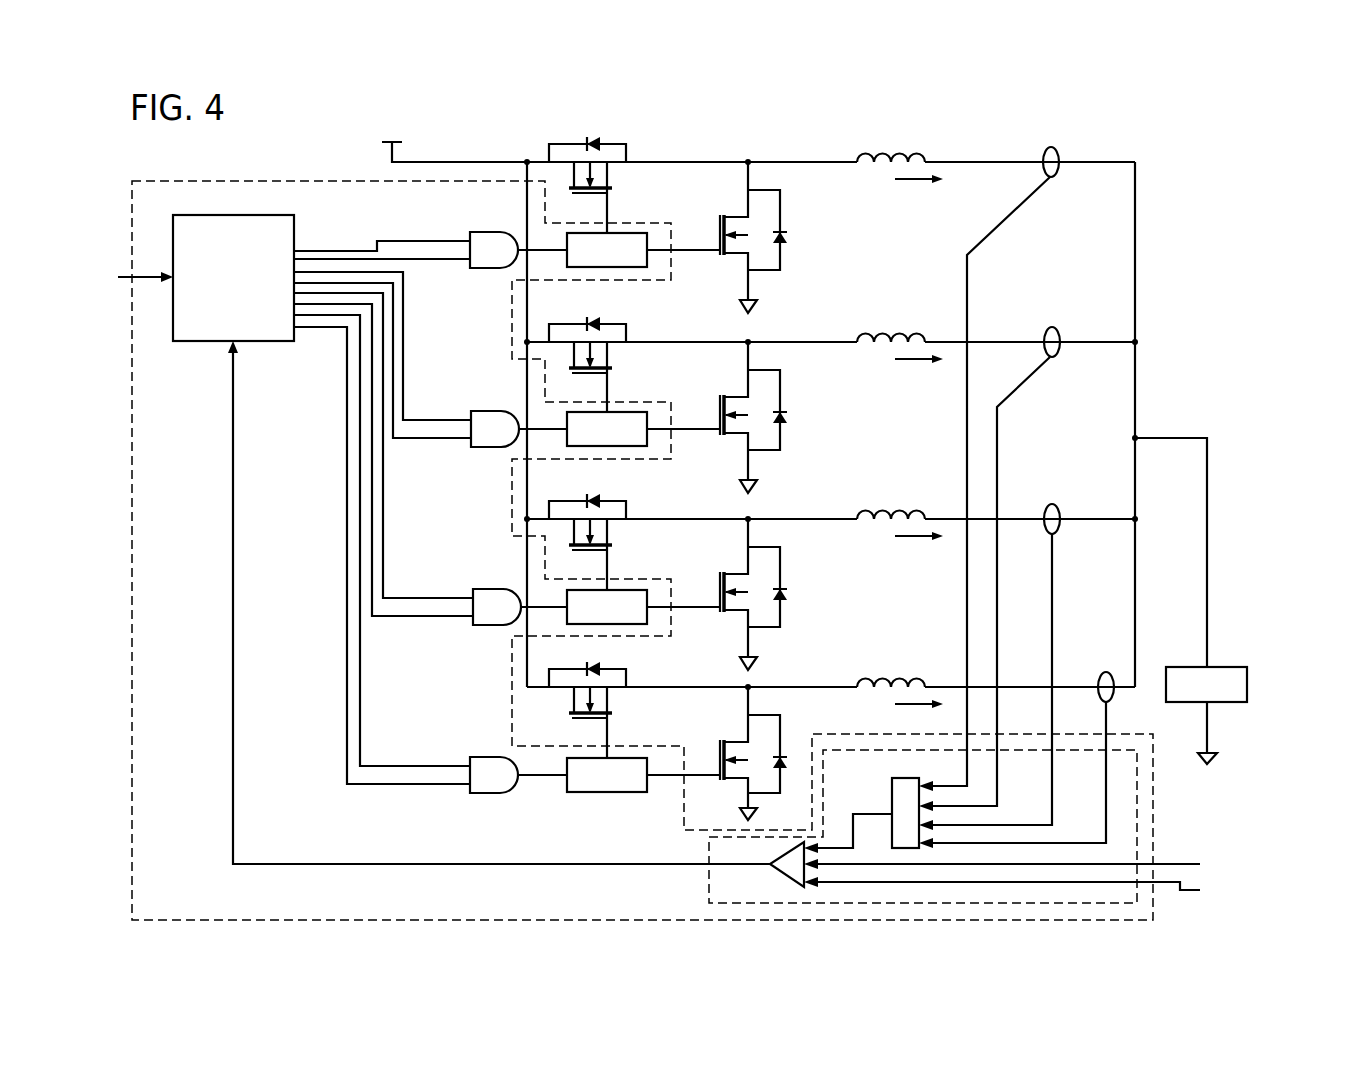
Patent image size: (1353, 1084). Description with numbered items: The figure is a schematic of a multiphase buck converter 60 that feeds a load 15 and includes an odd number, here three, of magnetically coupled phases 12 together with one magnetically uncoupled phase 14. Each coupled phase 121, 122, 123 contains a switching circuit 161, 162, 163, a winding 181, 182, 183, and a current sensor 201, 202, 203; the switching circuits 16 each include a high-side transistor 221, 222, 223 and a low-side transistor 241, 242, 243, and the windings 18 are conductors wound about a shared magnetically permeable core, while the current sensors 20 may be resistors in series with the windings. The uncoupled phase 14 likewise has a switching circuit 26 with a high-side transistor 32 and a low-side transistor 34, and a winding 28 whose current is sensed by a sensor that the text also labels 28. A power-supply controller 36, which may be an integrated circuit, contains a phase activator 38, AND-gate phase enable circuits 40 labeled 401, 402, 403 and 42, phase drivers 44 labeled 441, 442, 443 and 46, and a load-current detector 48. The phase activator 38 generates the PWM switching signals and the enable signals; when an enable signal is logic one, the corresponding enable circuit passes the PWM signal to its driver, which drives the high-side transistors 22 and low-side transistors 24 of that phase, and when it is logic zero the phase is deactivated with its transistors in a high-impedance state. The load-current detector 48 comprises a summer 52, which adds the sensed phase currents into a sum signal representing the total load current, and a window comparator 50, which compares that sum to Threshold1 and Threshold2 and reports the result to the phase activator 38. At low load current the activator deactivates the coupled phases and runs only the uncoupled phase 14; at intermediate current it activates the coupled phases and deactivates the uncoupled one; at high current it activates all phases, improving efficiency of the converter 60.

The multiphase buck converter 60 is at (1208, 165).
The load 15 is at (1230, 667).
The power-supply controller 36 is at (162, 182).
The phase activator 38 is at (206, 342).
The load-current detector 48 is at (709, 873).
The window comparator 50 is at (778, 870).
The summer 52 is at (891, 792).
The magnetically coupled phases 12 is at (769, 206).
The magnetically coupled phase 121 is at (832, 140).
The magnetically coupled phase 122 is at (878, 300).
The magnetically coupled phase 123 is at (880, 484).
The magnetically uncoupled phase 14 is at (884, 640).
The switching circuits 16 is at (623, 133).
The switching circuit 161 is at (622, 136).
The switching circuit 162 is at (640, 326).
The switching circuit 163 is at (640, 504).
The switching circuit 26 is at (642, 670).
The high-side transistors 22 is at (617, 197).
The high-side transistor 221 is at (613, 190).
The high-side transistor 222 is at (614, 370).
The high-side transistor 223 is at (614, 547).
The high-side transistor 32 is at (612, 688).
The low-side transistors 24 is at (729, 237).
The low-side transistor 241 is at (720, 214).
The low-side transistor 242 is at (720, 394).
The low-side transistor 243 is at (720, 571).
The low-side transistor 34 is at (724, 780).
The windings 18 is at (903, 150).
The winding 181 is at (889, 152).
The winding 182 is at (889, 332).
The winding 183 is at (889, 509).
The winding 28 is at (889, 677).
The current sensors 20 is at (1081, 142).
The current sensor 201 is at (1060, 151).
The current sensor 202 is at (1050, 327).
The current sensor 203 is at (1052, 504).
The phase enable circuits 40 is at (460, 237).
The phase enable circuit 401 is at (490, 232).
The phase enable circuit 402 is at (491, 411).
The phase enable circuit 403 is at (488, 626).
The phase enable circuit 42 is at (490, 757).
The phase drivers 44 is at (619, 275).
The phase driver 441 is at (594, 268).
The phase driver 442 is at (591, 447).
The phase driver 443 is at (567, 592).
The phase driver 46 is at (612, 792).